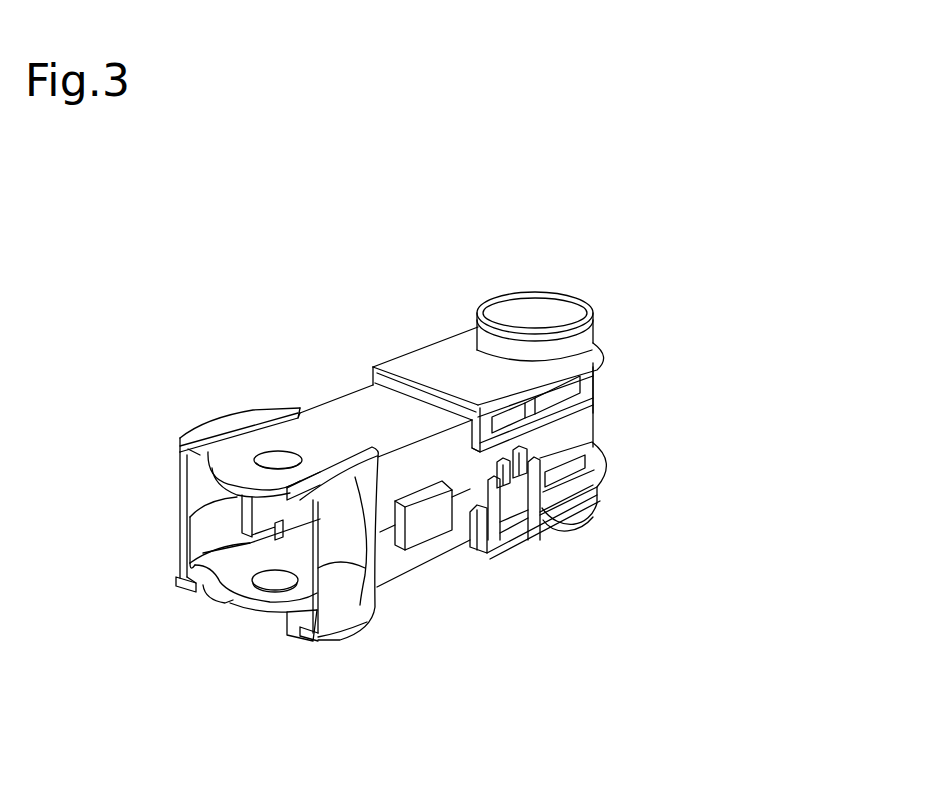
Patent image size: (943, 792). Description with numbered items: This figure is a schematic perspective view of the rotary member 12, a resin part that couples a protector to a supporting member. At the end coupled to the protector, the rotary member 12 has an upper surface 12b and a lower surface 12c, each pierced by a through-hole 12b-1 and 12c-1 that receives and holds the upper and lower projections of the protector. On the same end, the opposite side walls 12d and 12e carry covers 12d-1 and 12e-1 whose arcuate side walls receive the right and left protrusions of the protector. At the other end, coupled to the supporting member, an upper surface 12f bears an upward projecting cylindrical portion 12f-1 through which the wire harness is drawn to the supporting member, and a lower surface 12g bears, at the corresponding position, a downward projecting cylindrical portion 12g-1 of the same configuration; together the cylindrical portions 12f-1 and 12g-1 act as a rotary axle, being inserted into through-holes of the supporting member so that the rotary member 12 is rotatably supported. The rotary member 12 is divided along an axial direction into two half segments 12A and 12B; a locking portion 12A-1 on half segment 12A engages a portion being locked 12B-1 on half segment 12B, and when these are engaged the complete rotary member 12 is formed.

The rotary member 12 is at (156, 203).
The half segment 12A is at (611, 380).
The half segment 12B is at (597, 448).
The locking portion 12A-1 is at (568, 535).
The portion being locked 12B-1 is at (537, 540).
The upper surface 12b is at (312, 435).
The through-hole 12b-1 is at (270, 458).
The lower surface 12c is at (280, 603).
The through-hole 12c-1 is at (237, 600).
The side wall 12d is at (330, 402).
The cover 12d-1 is at (193, 444).
The side wall 12e is at (390, 562).
The cover 12e-1 is at (360, 603).
The upper surface 12f is at (437, 357).
The upward projecting cylindrical portion 12f-1 is at (546, 290).
The lower surface 12g is at (509, 541).
The downward projecting cylindrical portion 12g-1 is at (597, 510).